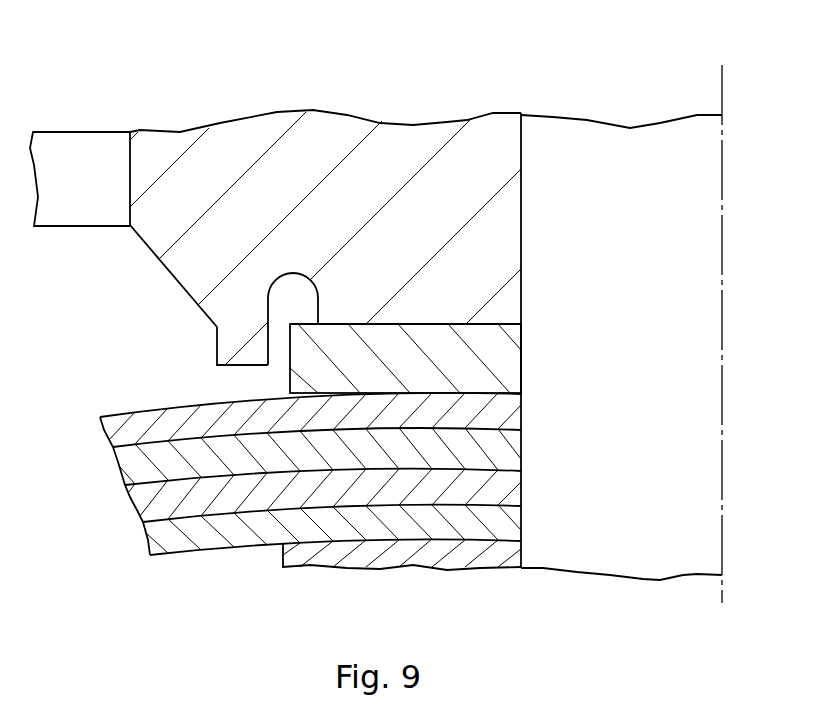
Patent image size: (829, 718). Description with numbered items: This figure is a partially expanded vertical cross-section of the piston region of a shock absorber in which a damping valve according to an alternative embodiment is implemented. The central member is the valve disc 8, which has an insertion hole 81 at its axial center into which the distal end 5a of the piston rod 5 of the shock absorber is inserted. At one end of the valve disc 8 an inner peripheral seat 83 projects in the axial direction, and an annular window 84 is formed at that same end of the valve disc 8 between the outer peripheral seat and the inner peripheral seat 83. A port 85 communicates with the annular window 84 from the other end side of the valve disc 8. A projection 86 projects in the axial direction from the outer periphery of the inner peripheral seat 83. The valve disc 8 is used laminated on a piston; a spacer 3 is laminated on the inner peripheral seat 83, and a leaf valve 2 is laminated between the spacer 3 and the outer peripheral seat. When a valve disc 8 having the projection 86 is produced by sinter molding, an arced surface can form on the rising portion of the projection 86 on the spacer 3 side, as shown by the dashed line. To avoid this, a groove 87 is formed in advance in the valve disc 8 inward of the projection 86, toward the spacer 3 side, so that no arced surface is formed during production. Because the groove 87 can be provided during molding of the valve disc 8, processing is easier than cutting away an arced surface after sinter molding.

The leaf valve 2 is at (112, 483).
The spacer 3 is at (422, 335).
The piston rod 5 is at (690, 206).
The distal end 5a is at (677, 380).
The valve disc 8 is at (461, 118).
The insertion hole 81 is at (523, 200).
The inner peripheral seat 83 is at (362, 324).
The annular window 84 is at (145, 249).
The port 85 is at (76, 140).
The projection 86 is at (223, 337).
The groove 87 is at (285, 276).